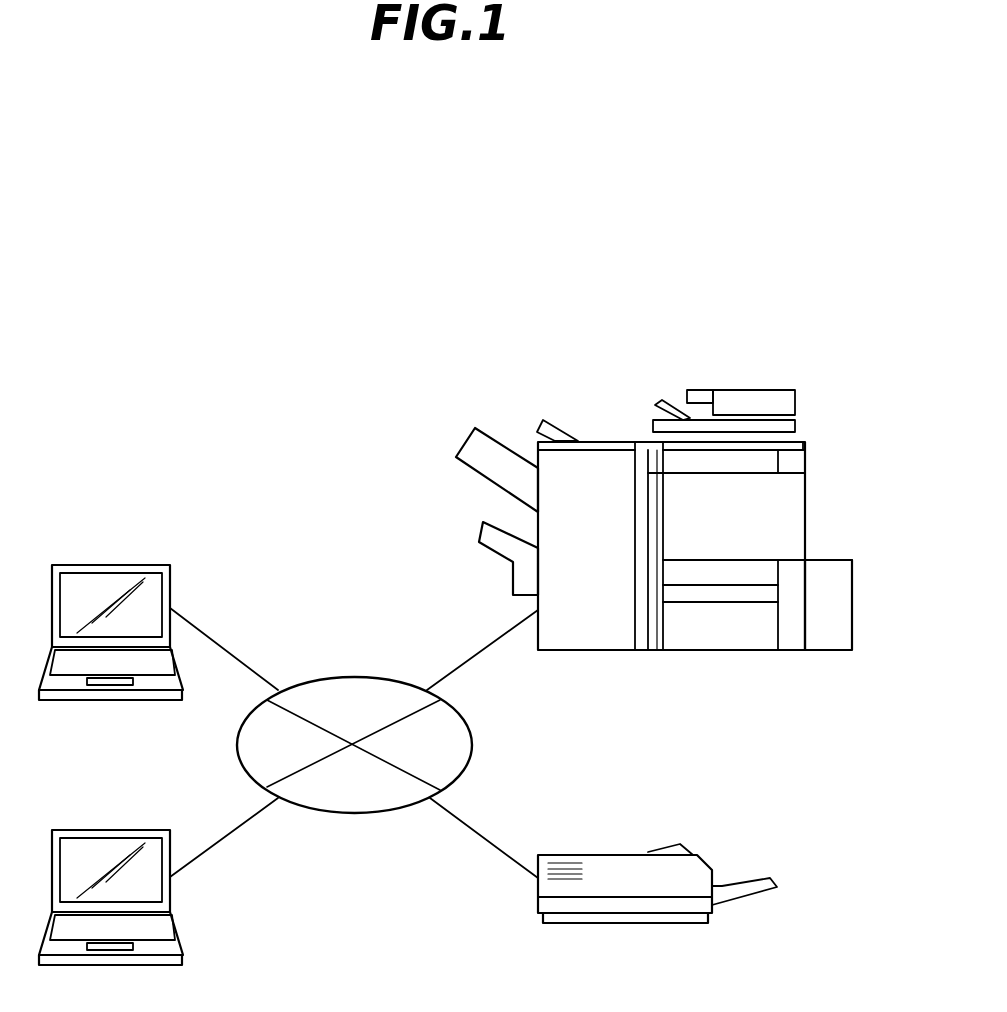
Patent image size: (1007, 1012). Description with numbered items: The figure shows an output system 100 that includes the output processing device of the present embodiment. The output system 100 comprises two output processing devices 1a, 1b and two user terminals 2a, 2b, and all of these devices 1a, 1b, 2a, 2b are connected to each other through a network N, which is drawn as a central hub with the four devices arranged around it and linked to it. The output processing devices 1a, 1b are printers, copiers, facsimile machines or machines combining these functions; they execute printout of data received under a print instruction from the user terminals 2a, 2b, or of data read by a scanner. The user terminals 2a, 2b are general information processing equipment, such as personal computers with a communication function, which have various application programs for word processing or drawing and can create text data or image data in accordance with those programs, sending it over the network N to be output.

The output system 100 is at (434, 309).
The network N is at (353, 677).
The output processing device 1a is at (752, 388).
The output processing device 1b is at (606, 853).
The user terminal 2a is at (108, 565).
The user terminal 2b is at (108, 830).